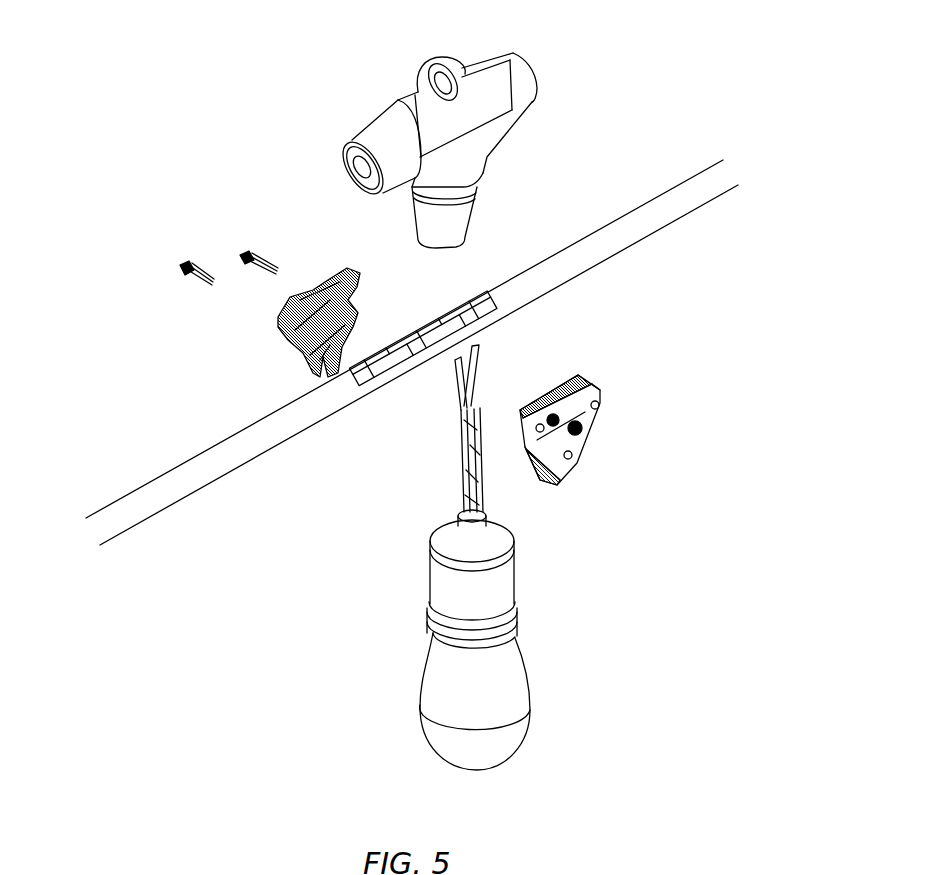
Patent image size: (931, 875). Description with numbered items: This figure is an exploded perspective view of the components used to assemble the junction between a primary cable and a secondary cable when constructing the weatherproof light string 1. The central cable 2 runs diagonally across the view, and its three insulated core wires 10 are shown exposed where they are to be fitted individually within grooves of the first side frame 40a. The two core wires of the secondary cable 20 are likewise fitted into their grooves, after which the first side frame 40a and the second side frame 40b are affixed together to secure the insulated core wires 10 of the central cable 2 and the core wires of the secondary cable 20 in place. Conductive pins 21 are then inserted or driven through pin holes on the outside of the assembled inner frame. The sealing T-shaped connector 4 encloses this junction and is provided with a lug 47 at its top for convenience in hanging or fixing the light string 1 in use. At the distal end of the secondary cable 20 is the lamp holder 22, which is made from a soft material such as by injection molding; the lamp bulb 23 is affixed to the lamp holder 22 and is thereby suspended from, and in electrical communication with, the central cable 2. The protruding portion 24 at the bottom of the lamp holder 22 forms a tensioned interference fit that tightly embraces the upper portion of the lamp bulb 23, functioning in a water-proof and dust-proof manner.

The weatherproof light string 1 is at (147, 124).
The central cable 2 is at (615, 240).
The sealing T-shaped connector 4 is at (483, 141).
The lug 47 is at (428, 68).
The insulated core wires 10 is at (427, 324).
The secondary cable 20 is at (482, 377).
The conductive pins 21 is at (180, 270).
The lamp holder 22 is at (503, 582).
The lamp bulb 23 is at (523, 715).
The protruding portion 24 is at (502, 637).
The first side frame 40a is at (288, 337).
The second side frame 40b is at (580, 467).